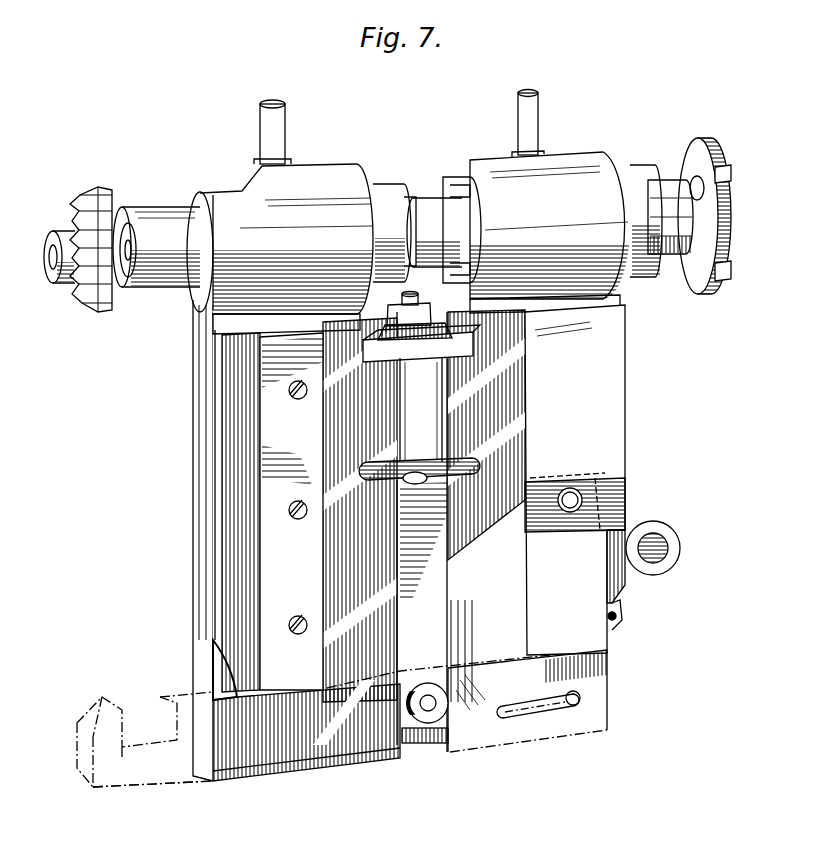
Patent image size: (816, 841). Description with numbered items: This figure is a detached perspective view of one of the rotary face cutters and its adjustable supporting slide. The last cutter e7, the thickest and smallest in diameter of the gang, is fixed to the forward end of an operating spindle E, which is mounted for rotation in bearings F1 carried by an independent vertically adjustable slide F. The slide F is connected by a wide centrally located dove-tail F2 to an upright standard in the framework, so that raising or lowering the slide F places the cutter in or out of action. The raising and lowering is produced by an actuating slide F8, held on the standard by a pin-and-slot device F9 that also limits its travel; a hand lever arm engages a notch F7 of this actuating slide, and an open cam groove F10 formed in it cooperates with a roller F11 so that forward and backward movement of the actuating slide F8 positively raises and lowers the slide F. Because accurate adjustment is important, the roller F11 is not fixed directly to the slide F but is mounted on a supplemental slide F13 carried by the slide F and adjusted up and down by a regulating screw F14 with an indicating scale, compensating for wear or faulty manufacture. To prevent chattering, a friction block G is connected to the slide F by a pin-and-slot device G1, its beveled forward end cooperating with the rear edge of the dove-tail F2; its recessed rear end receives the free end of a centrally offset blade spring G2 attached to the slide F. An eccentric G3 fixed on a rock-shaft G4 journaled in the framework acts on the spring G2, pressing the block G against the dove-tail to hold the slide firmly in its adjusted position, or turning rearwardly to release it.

The rotary face cutter e7 is at (100, 199).
The operating spindle E is at (131, 243).
The bearing F1 is at (459, 212).
The adjustable slide F is at (195, 437).
The dove-tail F2 is at (442, 497).
The notch F7 is at (125, 726).
The actuating slide F8 is at (167, 773).
The pin-and-slot device F9 is at (574, 702).
The cam groove F10 is at (413, 745).
The roller F11 is at (427, 690).
The supplemental slide F13 is at (440, 553).
The regulating screw F14 is at (400, 318).
The friction block G is at (624, 498).
The pin-and-slot device G1 is at (567, 512).
The blade spring G2 is at (622, 593).
The eccentric G3 is at (658, 528).
The rock-shaft G4 is at (662, 565).